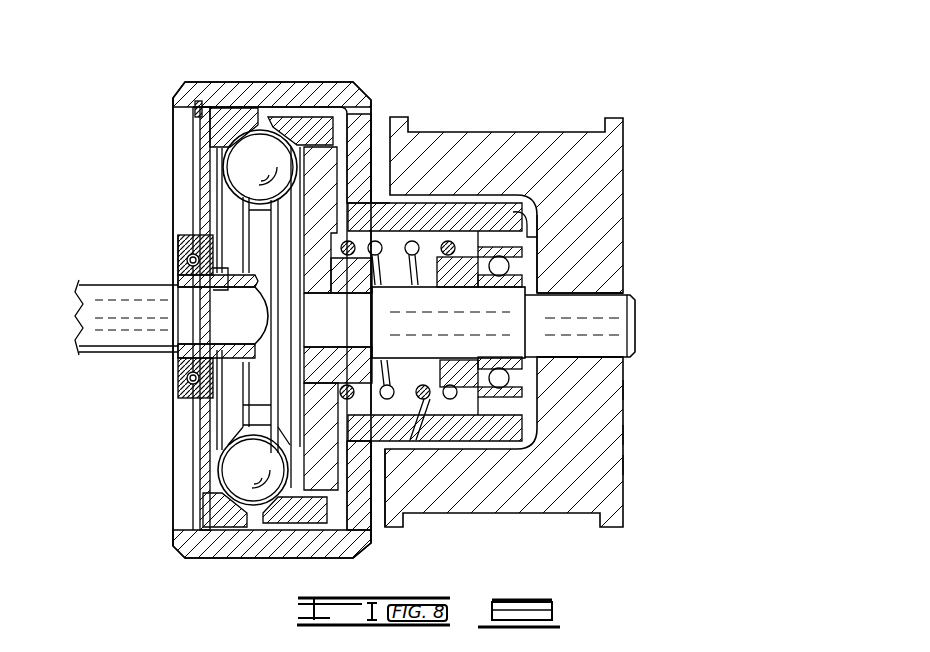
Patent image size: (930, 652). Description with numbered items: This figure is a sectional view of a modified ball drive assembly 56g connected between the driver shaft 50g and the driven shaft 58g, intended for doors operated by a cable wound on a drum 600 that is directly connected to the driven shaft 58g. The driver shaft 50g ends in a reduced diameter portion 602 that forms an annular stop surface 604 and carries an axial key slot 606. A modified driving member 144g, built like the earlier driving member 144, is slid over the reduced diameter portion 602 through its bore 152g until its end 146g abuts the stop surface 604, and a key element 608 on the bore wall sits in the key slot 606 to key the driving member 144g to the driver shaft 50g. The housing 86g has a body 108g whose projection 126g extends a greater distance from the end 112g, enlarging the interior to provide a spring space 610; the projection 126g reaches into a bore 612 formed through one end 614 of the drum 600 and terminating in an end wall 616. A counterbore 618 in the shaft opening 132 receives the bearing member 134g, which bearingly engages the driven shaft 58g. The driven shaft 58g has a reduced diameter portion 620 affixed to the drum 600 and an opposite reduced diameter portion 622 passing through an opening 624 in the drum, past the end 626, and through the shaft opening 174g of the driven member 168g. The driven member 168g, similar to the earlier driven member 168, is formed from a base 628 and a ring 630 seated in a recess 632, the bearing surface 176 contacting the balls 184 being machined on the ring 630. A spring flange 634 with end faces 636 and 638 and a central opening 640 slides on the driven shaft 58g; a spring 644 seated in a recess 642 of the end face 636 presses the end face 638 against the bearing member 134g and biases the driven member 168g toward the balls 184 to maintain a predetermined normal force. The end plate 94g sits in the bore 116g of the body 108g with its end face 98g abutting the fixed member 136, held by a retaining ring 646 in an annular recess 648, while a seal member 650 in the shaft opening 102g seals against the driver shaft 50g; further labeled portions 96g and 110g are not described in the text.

The driver shaft 50g is at (83, 330).
The modified ball drive assembly 56g is at (300, 78).
The driven shaft 58g is at (625, 320).
The housing 86g is at (222, 80).
The end plate 94g is at (200, 440).
The clutch plate 96g is at (195, 428).
The end face 98g is at (200, 470).
The shaft opening 102g is at (190, 237).
The body 108g is at (262, 80).
The housing shell 110g is at (173, 96).
The end of the body 112g is at (373, 535).
The bore 116g is at (203, 515).
The projection 126g is at (425, 225).
The shaft opening 132 is at (562, 263).
The bearing member 134g is at (592, 378).
The fixed member 136 is at (232, 108).
The driving member 144 is at (358, 195).
The driving member 144g is at (207, 403).
The end 146g is at (183, 270).
The bore 152g is at (186, 357).
The driven member 168 is at (325, 470).
The driven member 168g is at (342, 556).
The shaft opening 174g is at (354, 340).
The bearing surface 176 is at (285, 217).
The balls 184 is at (275, 156).
The drum 600 is at (605, 152).
The reduced diameter portion 602 is at (183, 333).
The annular stop surface 604 is at (180, 305).
The key slot 606 is at (178, 318).
The key element 608 is at (178, 292).
The spring space 610 is at (388, 400).
The bore 612 is at (450, 395).
The end of the drum 614 is at (385, 135).
The end wall 616 is at (512, 198).
The counterbore 618 is at (565, 270).
The reduced diameter portion 620 is at (600, 292).
The reduced diameter portion 622 is at (448, 321).
The opening 624 is at (620, 356).
The end of the drum 626 is at (417, 210).
The base 628 is at (370, 530).
The ring 630 is at (248, 556).
The recess 632 is at (321, 493).
The spring flange 634 is at (470, 245).
The end face 636 is at (620, 466).
The end face 638 is at (622, 394).
The opening 640 is at (445, 358).
The recess 642 is at (620, 436).
The spring 644 is at (395, 405).
The retaining ring 646 is at (195, 116).
The annular recess 648 is at (197, 105).
The seal member 650 is at (178, 268).